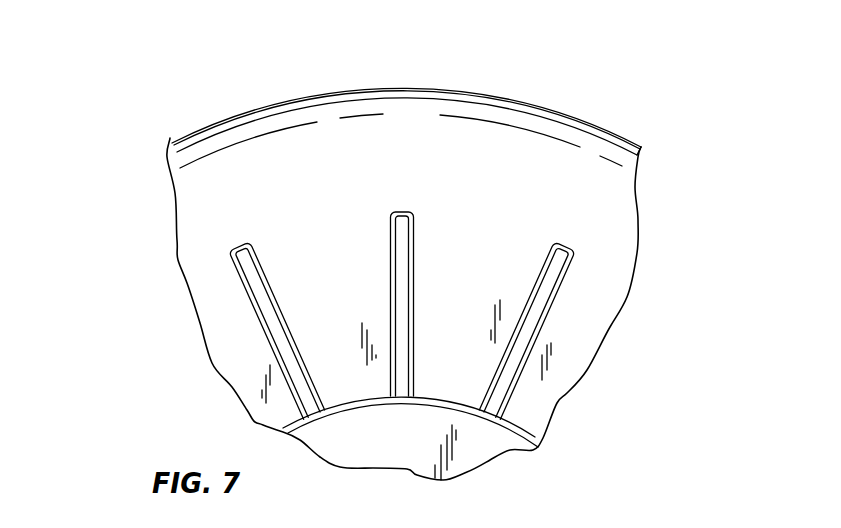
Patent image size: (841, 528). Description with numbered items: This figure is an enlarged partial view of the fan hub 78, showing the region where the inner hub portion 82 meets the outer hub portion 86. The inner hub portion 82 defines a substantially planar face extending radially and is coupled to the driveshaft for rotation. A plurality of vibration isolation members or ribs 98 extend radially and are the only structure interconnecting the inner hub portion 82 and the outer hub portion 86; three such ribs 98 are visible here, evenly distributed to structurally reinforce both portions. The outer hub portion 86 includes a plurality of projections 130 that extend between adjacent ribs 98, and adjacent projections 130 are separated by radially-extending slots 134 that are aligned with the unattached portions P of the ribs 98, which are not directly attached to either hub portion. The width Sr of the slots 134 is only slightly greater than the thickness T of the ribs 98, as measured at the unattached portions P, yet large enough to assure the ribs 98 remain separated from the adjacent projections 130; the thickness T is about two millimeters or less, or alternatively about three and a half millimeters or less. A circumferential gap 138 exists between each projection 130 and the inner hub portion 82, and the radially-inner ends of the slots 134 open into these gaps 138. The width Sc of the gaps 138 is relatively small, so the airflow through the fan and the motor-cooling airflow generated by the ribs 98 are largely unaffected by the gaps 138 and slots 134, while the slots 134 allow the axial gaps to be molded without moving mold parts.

The hub 78 is at (603, 62).
The outer hub portion 86 is at (612, 180).
The inner hub portion 82 is at (480, 440).
The ribs 98 is at (300, 378).
The radially-extending slots 134 is at (412, 228).
The projections 130 is at (330, 270).
The circumferential gap 138 is at (452, 400).
The unattached portions of the ribs P is at (402, 231).
The thickness of the ribs T is at (390, 258).
The width of the slots Sr is at (395, 293).
The width of the gaps Sc is at (350, 375).